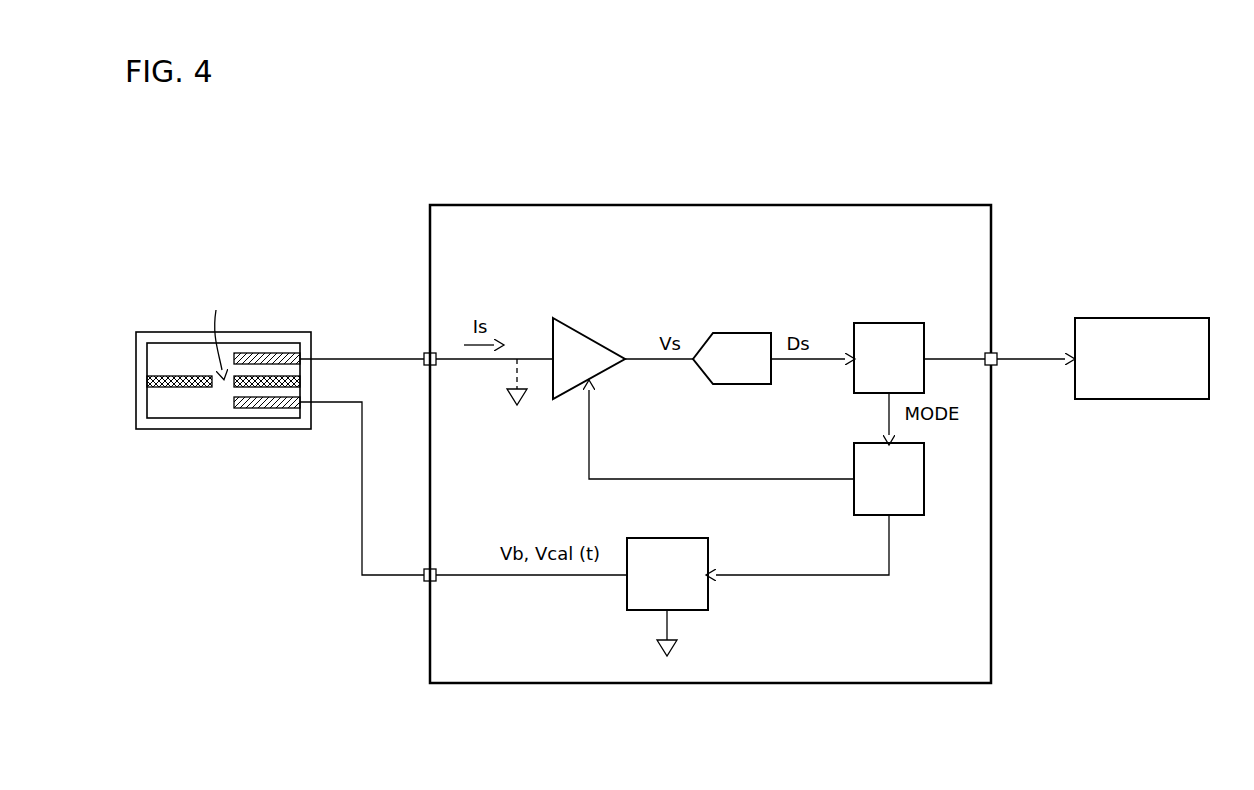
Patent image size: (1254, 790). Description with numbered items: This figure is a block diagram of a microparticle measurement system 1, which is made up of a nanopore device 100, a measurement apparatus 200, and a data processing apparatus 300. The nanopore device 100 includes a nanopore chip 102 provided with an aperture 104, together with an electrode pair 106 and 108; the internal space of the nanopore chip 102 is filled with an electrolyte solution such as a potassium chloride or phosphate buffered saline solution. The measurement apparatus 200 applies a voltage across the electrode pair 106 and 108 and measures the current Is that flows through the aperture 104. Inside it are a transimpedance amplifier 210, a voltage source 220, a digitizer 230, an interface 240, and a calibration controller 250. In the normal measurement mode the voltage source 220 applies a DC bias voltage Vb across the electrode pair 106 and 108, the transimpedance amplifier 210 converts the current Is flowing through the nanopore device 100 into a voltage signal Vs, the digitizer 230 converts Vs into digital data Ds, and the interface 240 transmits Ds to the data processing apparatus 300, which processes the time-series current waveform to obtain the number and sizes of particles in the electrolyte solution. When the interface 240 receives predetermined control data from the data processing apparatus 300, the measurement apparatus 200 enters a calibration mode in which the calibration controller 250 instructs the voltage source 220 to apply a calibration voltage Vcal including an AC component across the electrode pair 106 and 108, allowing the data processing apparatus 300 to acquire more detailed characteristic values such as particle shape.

The microparticle measurement system 1 is at (1163, 134).
The nanopore device 100 is at (277, 332).
The nanopore chip 102 is at (232, 384).
The aperture 104 is at (217, 327).
The electrode 106 is at (285, 351).
The electrode 108 is at (263, 408).
The measurement apparatus 200 is at (788, 205).
The transimpedance amplifier 210 is at (587, 335).
The voltage source 220 is at (668, 538).
The digitizer 230 is at (738, 333).
The interface 240 is at (887, 323).
The calibration controller 250 is at (910, 517).
The data processing apparatus 300 is at (1152, 318).